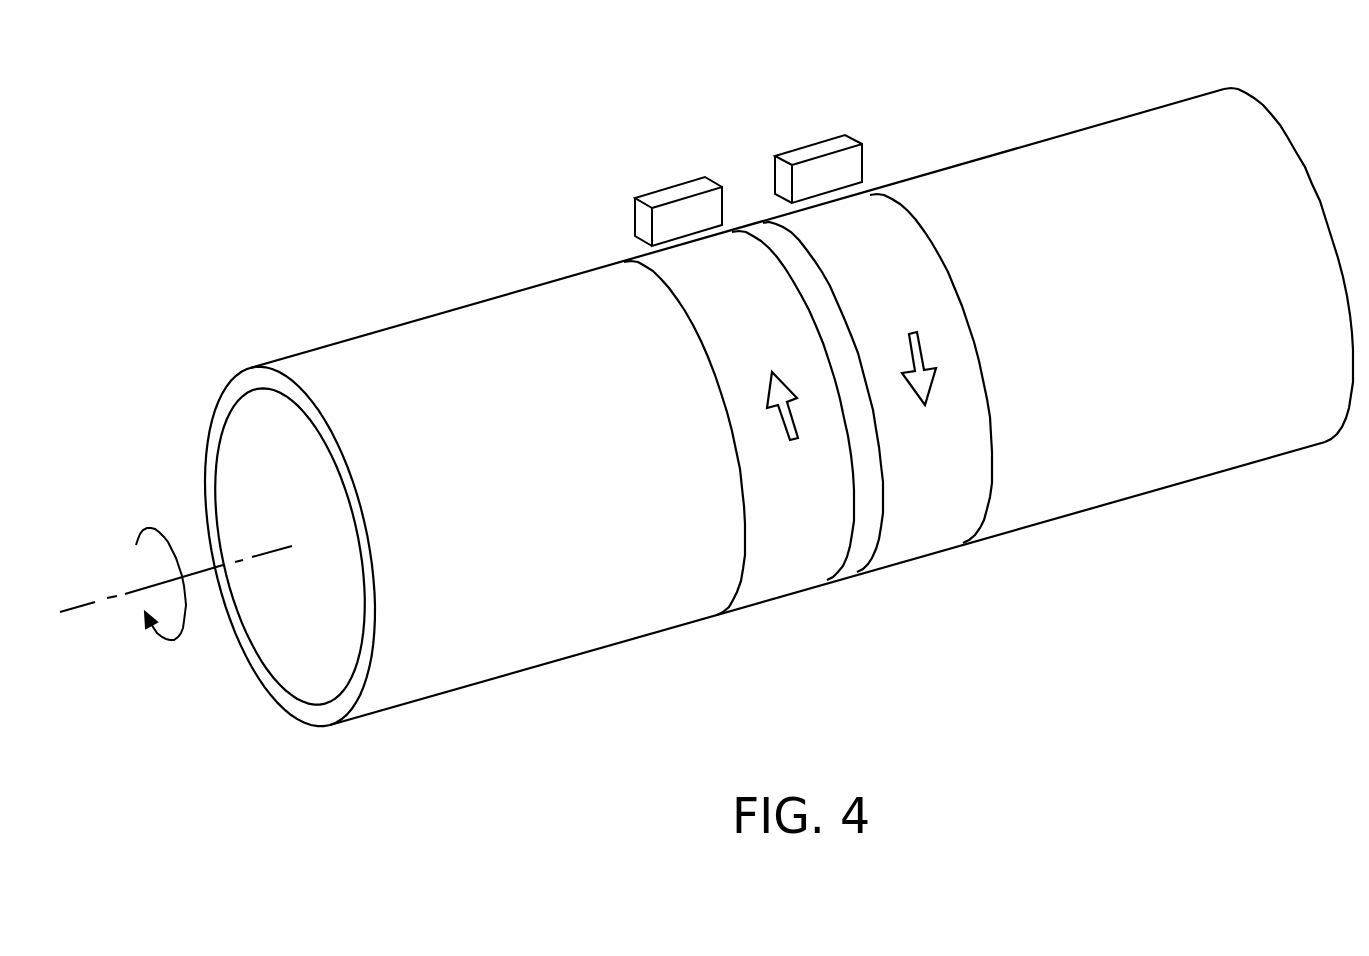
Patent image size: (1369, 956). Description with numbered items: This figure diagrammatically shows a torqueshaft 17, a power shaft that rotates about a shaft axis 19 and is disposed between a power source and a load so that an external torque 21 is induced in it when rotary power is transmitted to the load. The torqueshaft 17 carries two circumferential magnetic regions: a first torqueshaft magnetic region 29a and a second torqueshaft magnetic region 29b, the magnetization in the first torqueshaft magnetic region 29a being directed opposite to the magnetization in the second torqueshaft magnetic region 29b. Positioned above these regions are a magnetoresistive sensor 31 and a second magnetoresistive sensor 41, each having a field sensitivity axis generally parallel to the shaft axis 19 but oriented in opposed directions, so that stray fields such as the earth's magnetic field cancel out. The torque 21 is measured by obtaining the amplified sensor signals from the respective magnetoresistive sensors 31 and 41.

The torqueshaft 17 is at (1102, 506).
The shaft axis 19 is at (90, 598).
The torque 21 is at (145, 528).
The first torqueshaft magnetic region 29a is at (773, 600).
The second torqueshaft magnetic region 29b is at (912, 562).
The magnetoresistive sensor 31 is at (678, 193).
The second magnetoresistive sensor 41 is at (818, 153).